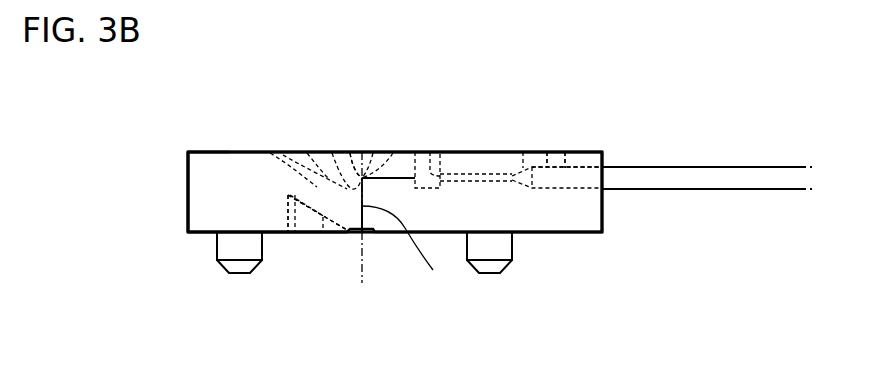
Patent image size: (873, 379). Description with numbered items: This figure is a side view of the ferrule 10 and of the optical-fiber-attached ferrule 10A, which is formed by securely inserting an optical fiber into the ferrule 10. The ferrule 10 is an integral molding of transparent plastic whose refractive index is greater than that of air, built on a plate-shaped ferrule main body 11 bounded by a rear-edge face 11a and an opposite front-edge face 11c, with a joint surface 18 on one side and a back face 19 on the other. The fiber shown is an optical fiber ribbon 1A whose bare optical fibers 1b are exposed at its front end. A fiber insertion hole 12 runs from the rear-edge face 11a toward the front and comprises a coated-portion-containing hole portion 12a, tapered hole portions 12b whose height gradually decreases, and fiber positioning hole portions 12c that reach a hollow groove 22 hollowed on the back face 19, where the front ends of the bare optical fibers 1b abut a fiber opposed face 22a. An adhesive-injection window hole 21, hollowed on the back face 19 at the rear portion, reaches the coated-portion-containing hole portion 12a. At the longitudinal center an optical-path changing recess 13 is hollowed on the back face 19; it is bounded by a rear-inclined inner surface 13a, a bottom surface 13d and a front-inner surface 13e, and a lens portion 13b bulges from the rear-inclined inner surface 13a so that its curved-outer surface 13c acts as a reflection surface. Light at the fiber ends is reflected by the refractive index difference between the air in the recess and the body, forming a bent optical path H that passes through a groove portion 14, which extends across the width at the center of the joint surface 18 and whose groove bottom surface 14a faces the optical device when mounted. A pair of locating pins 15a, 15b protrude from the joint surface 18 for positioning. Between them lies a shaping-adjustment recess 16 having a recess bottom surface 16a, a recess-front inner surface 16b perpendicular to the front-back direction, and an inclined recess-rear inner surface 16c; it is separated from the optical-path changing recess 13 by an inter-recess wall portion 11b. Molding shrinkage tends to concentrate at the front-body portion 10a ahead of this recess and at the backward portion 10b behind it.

The optical fiber ribbon 1A is at (711, 190).
The bare optical fibers 1b is at (767, 190).
The optical-fiber-attached ferrule 10A is at (583, 111).
The ferrule 10 is at (590, 152).
The front-body portion 10a is at (188, 217).
The backward portion 10b is at (576, 233).
The ferrule main body 11 is at (603, 153).
The rear-edge face 11a is at (603, 222).
The inter-recess wall portion 11b is at (283, 154).
The front-edge face 11c is at (188, 177).
The fiber insertion hole 12 is at (572, 188).
The coated-portion-containing hole portion 12a is at (603, 173).
The tapered hole portions 12b is at (528, 152).
The fiber positioning hole portion 12c is at (440, 153).
The optical-path changing recess 13 is at (332, 152).
The rear-inclined inner surface 13a is at (373, 152).
The lens portion 13b is at (350, 152).
The curved-outer surface 13c is at (350, 152).
The bottom surface 13d is at (307, 152).
The front-inner surface 13e is at (310, 156).
The groove portion 14 is at (367, 233).
The groove bottom surface 14a is at (352, 233).
The locating pin 15a is at (217, 256).
The locating pin 15b is at (512, 250).
The shaping-adjustment recess 16 is at (295, 233).
The recess bottom surface 16a is at (303, 233).
The recess-front inner surface 16b is at (287, 233).
The recess-rear inner surface 16c is at (323, 233).
The joint surface 18 is at (200, 233).
The back face 19 is at (205, 152).
The adhesive-injection window hole 21 is at (545, 152).
The hollow groove 22 is at (428, 152).
The fiber opposed face 22a is at (426, 152).
The bent optical path H is at (408, 247).